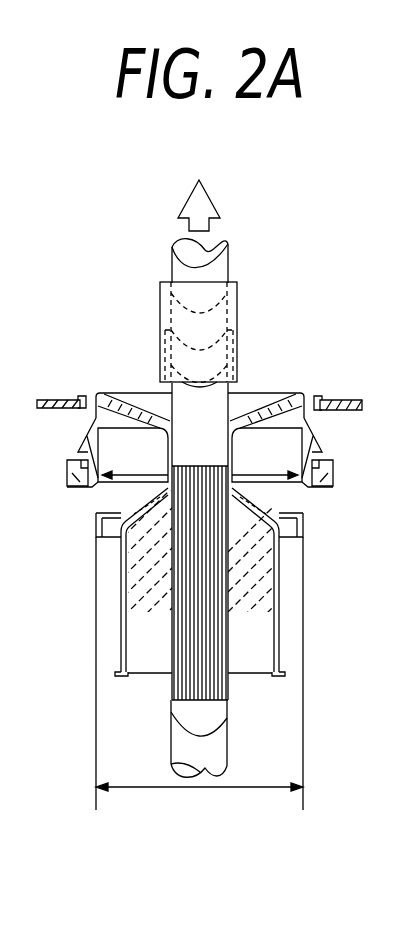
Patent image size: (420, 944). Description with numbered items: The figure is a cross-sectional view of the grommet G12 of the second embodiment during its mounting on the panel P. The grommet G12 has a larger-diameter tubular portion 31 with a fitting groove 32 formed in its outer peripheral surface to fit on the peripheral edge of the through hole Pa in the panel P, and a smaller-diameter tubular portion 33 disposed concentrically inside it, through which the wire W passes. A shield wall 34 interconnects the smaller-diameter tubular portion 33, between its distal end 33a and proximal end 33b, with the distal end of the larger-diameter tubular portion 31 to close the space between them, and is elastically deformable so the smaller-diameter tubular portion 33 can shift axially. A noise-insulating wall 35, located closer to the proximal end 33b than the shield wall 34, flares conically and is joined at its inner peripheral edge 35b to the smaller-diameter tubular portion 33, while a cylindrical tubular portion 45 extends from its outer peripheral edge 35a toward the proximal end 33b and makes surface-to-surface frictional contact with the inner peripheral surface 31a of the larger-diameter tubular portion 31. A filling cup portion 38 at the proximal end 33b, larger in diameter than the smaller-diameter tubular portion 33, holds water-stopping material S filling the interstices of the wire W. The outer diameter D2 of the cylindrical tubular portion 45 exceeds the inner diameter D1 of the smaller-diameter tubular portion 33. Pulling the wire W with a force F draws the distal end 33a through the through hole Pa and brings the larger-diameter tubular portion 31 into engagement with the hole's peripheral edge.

The force F is at (199, 189).
The smaller-diameter tubular portion 33 is at (238, 390).
The distal end 33a is at (238, 318).
The proximal end 33b is at (296, 540).
The wire W is at (172, 690).
The grommet G12 is at (284, 389).
The shield wall 34 is at (104, 392).
The inner diameter D1 is at (200, 464).
The outer diameter D2 is at (199, 741).
The panel P is at (50, 399).
The through hole Pa is at (84, 396).
The fitting groove 32 is at (66, 462).
The larger-diameter tubular portion 31 is at (76, 488).
The inner peripheral surface 31a is at (102, 490).
The noise-insulating wall 35 is at (121, 560).
The outer peripheral edge 35a is at (303, 513).
The inner peripheral edge 35b is at (165, 497).
The water-stopping material S is at (262, 588).
The filling cup portion 38 is at (276, 643).
The cylindrical tubular portion 45 is at (95, 530).